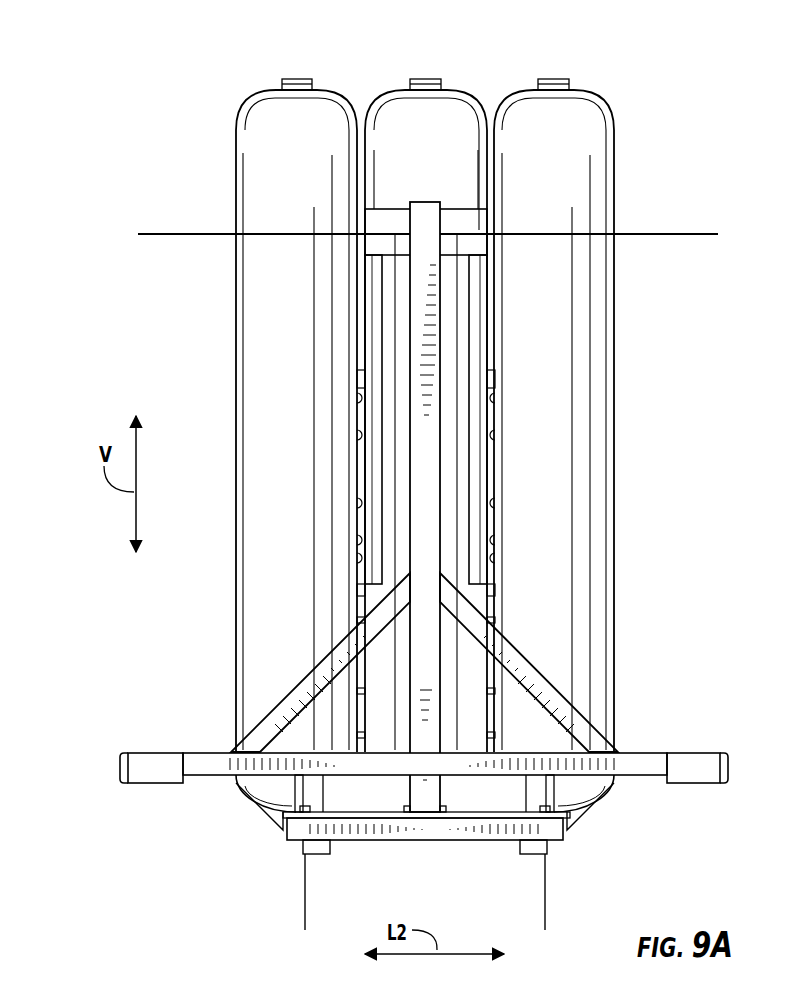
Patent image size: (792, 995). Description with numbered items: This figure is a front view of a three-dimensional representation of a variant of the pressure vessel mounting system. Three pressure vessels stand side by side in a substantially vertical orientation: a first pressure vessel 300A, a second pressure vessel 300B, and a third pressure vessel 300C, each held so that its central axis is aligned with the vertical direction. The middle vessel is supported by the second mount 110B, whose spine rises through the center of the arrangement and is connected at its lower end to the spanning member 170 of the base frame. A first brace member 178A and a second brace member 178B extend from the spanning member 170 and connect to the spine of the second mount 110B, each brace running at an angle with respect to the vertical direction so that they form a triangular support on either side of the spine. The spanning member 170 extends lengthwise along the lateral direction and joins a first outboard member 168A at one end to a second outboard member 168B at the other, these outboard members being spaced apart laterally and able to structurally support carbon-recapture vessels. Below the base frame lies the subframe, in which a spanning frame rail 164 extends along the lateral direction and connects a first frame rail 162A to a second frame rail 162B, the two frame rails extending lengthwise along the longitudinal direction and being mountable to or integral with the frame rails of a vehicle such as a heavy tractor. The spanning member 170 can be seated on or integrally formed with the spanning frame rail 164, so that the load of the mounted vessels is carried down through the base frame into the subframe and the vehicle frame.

The first pressure vessel 300A is at (258, 120).
The second pressure vessel 300B is at (398, 120).
The third pressure vessel 300C is at (583, 120).
The second mount 110B is at (400, 431).
The first brace member 178A is at (270, 718).
The second brace member 178B is at (568, 713).
The first outboard member 168A is at (162, 767).
The second outboard member 168B is at (685, 767).
The first frame rail 162A is at (305, 907).
The second frame rail 162B is at (545, 907).
The spanning frame rail 164 is at (428, 828).
The spanning member 170 is at (460, 770).